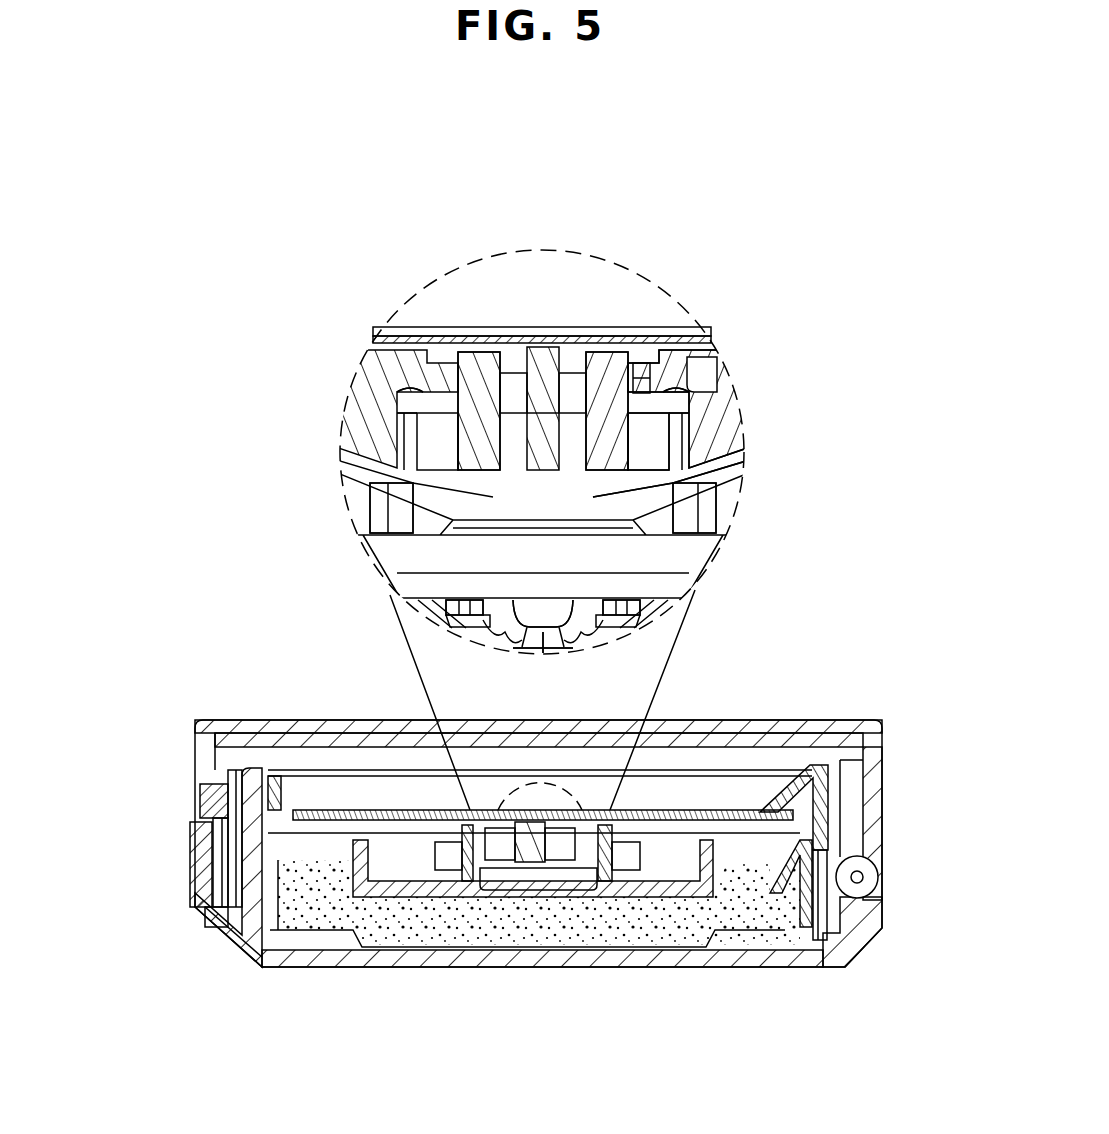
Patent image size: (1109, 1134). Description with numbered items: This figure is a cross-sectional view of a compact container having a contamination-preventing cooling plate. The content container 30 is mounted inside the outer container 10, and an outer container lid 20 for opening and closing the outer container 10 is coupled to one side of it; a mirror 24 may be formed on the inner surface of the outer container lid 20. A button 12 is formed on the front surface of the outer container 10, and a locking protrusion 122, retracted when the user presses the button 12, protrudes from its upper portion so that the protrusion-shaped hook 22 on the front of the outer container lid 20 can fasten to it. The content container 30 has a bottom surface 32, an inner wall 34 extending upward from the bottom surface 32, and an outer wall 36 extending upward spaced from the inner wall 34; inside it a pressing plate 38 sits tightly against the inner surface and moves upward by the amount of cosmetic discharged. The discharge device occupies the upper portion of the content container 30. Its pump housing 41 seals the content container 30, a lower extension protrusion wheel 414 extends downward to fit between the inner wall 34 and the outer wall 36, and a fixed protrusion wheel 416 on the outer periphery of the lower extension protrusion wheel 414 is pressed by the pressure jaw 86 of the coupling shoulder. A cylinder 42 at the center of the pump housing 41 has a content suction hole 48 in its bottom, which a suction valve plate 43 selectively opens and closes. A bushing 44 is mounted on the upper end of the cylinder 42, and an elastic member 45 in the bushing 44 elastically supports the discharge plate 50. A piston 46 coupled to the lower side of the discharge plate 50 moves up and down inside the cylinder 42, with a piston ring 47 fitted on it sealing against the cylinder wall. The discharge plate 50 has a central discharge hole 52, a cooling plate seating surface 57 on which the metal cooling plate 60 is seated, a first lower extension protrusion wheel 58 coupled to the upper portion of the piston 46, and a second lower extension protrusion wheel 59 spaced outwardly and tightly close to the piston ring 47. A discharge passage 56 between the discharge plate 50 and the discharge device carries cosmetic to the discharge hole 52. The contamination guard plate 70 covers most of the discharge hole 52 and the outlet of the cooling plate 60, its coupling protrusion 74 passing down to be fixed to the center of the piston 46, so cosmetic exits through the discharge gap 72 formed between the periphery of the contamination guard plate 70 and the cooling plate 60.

The outer container 10 is at (228, 960).
The button 12 is at (196, 857).
The outer container lid 20 is at (841, 712).
The hook 22 is at (205, 817).
The mirror 24 is at (830, 762).
The content container 30 is at (493, 968).
The bottom surface 32 is at (598, 967).
The inner wall 34 is at (785, 900).
The outer wall 36 is at (808, 930).
The pressing plate 38 is at (653, 945).
The pump housing 41 is at (322, 855).
The cylinder 42 is at (443, 810).
The suction valve plate 43 is at (542, 652).
The bushing 44 is at (380, 835).
The elastic member 45 is at (403, 810).
The piston 46 is at (430, 503).
The piston ring 47 is at (362, 468).
The content suction hole 48 is at (582, 640).
The discharge plate 50 is at (716, 365).
The discharge hole 52 is at (618, 340).
The discharge passage 56 is at (653, 400).
The cooling plate seating surface 57 is at (732, 396).
The first lower extension protrusion wheel 58 is at (712, 476).
The second lower extension protrusion wheel 59 is at (710, 434).
The cooling plate 60 is at (398, 326).
The contamination guard plate 70 is at (545, 338).
The discharge gap 72 is at (422, 336).
The coupling protrusion 74 is at (527, 348).
The pressure jaw 86 is at (250, 790).
The locking protrusion 122 is at (208, 792).
The lower extension protrusion wheel 414 is at (218, 908).
The fixed protrusion wheel 416 is at (200, 887).